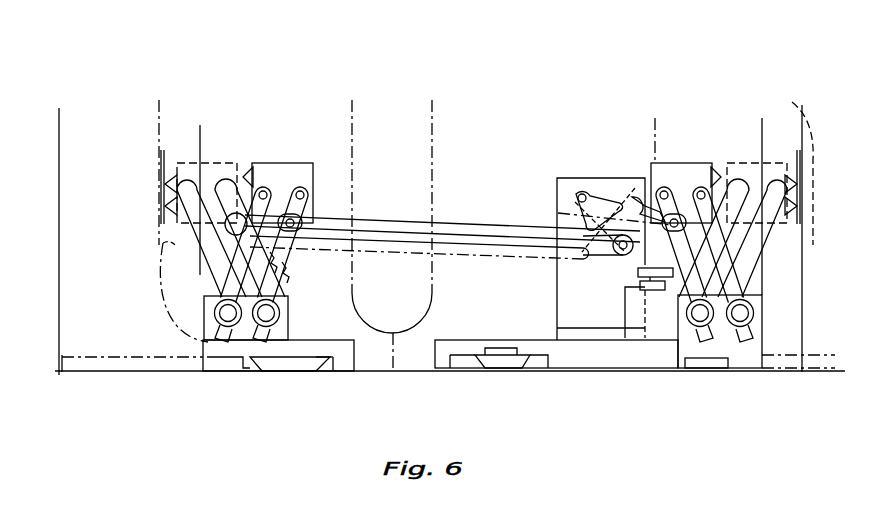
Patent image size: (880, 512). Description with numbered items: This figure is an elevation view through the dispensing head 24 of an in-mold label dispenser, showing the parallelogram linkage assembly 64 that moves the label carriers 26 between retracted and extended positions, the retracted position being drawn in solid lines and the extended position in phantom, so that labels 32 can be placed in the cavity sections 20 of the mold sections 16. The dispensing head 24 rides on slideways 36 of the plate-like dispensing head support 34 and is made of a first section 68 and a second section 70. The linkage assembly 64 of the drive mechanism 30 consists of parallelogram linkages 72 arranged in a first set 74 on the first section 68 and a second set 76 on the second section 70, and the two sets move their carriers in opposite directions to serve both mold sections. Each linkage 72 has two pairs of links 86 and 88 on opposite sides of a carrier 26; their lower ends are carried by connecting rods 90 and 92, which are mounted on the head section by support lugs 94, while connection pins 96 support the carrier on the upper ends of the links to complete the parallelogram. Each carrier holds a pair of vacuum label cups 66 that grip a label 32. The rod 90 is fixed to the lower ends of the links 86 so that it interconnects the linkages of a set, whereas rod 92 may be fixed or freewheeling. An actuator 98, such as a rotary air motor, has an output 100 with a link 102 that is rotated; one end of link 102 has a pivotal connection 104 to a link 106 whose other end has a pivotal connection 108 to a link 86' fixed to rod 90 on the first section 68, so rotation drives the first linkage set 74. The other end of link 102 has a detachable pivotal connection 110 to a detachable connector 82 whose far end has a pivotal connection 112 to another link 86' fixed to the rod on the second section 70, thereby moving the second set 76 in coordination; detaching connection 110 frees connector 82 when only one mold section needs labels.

The mold section 16 is at (63, 375).
The cavity section 20 is at (163, 245).
The dispensing head 24 is at (775, 343).
The label carrier 26 is at (208, 166).
The drive mechanism 30 is at (548, 160).
The label 32 is at (160, 162).
The dispensing head support 34 is at (390, 372).
The slideway 36 is at (296, 372).
The parallelogram linkage assembly 64 is at (655, 137).
The label cup 66 is at (184, 176).
The first section of the dispensing head 68 is at (605, 360).
The second section of the dispensing head 70 is at (230, 372).
The parallelogram linkage 72 is at (203, 313).
The first set of linkages 74 is at (785, 302).
The second set of linkages 76 is at (200, 314).
The detachable connector 82 is at (470, 235).
The link 86 is at (458, 289).
The link 86' is at (489, 283).
The link 88 is at (216, 279).
The connecting rod 90 is at (282, 302).
The connecting rod 92 is at (226, 330).
The support lug 94 is at (290, 322).
The connection pin 96 is at (293, 180).
The actuator 98 is at (592, 178).
The output 100 is at (594, 215).
The link 102 is at (558, 213).
The pivotal connection 104 is at (578, 195).
The link 106 is at (640, 185).
The pivotal connection 108 is at (640, 262).
The detachable pivotal connection 110 is at (618, 250).
The pivotal connection 112 is at (342, 193).